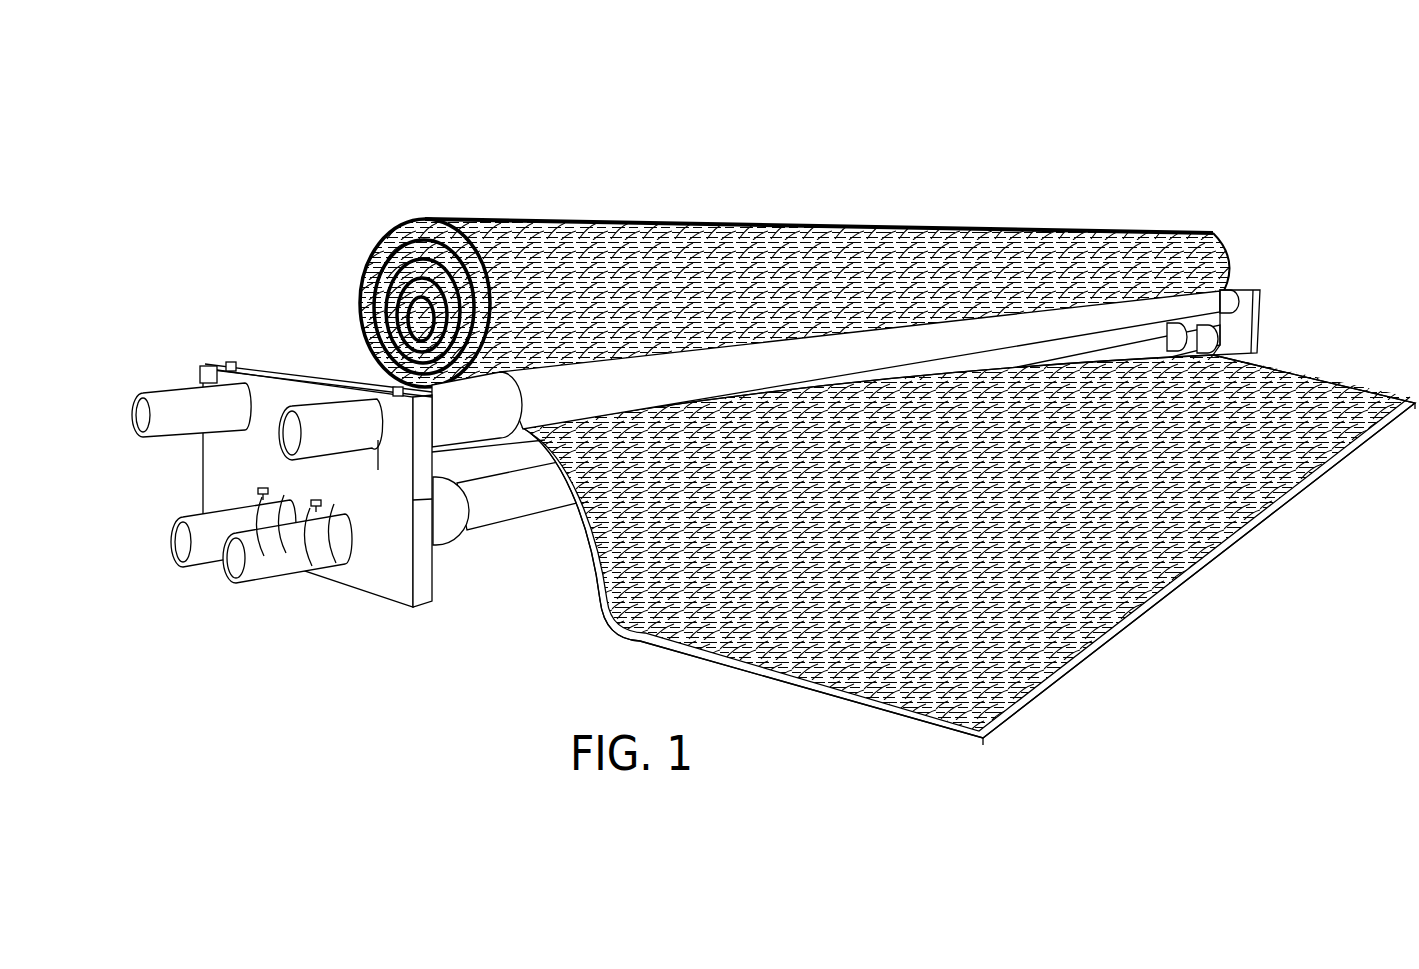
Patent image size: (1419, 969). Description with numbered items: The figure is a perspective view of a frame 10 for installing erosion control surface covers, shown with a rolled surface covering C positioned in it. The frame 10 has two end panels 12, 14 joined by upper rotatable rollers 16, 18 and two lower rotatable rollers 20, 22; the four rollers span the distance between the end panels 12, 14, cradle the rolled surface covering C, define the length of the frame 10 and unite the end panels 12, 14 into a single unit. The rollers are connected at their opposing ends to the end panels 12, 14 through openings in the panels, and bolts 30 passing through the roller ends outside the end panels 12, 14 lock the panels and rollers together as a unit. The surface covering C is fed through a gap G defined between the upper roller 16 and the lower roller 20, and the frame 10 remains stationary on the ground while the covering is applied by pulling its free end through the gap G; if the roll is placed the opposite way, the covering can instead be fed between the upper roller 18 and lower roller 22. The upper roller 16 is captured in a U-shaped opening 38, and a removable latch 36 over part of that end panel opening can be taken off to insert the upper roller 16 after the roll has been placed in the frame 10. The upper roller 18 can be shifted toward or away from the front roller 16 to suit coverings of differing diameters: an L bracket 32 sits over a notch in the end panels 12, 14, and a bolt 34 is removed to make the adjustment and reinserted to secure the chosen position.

The frame 10 is at (362, 132).
The end panel 12 is at (1250, 318).
The end panel 14 is at (384, 572).
The upper roller 16 is at (960, 338).
The upper roller 18 is at (166, 401).
The lower roller 20 is at (510, 505).
The lower roller 22 is at (201, 522).
The bolts 30 is at (262, 497).
The L bracket 32 is at (207, 364).
The bolt 34 is at (231, 366).
The removable latch 36 is at (322, 406).
The U-shaped opening 38 is at (383, 433).
The rolled surface covering C is at (747, 263).
The gap G is at (487, 458).